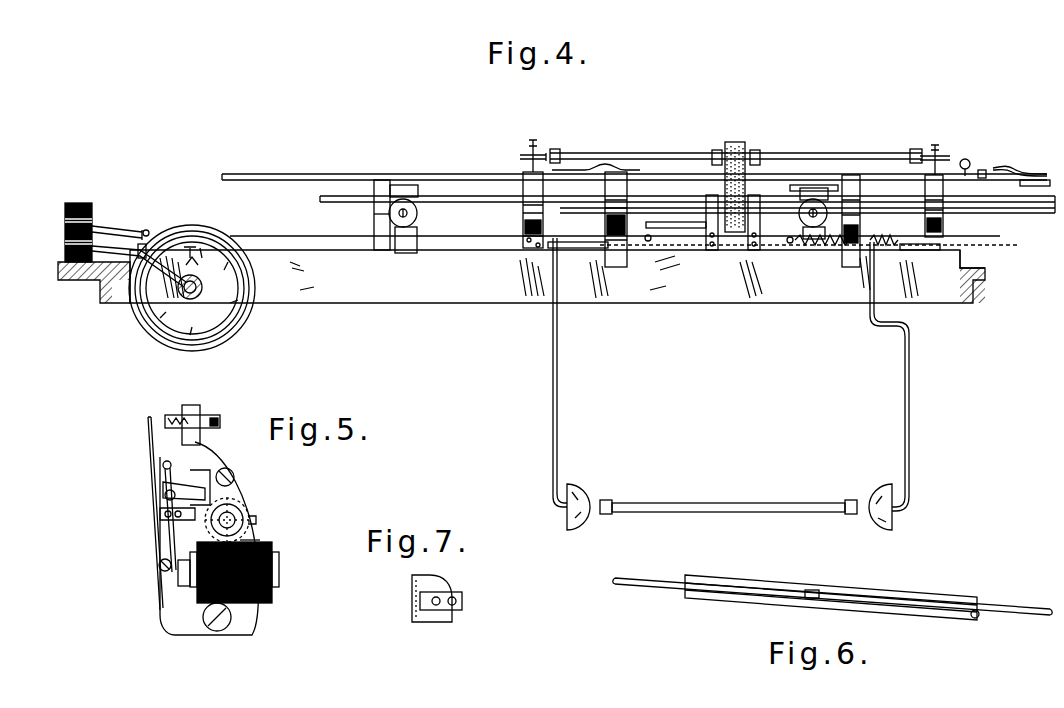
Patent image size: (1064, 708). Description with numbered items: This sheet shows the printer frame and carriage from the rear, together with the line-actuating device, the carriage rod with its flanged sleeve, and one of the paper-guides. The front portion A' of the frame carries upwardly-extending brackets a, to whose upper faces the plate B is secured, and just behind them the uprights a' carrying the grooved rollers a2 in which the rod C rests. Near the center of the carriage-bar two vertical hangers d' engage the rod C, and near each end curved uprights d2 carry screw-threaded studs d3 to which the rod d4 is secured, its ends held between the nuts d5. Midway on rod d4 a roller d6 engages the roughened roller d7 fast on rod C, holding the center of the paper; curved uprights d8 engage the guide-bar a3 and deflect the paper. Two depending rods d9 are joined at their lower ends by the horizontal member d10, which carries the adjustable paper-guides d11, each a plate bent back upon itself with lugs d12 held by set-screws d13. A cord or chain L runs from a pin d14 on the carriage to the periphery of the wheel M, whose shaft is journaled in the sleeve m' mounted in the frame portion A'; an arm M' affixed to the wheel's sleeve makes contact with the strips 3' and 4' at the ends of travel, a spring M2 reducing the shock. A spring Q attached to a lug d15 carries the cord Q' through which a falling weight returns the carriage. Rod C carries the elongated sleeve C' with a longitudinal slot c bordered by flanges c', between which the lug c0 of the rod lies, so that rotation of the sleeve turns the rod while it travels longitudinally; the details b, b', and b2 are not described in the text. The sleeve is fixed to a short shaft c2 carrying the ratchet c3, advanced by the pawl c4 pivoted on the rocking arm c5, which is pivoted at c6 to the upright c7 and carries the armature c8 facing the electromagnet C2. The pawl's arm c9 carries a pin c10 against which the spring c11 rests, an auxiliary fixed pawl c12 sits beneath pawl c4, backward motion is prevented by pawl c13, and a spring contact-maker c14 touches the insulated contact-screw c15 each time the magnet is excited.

In FIG. 4, the guide-bar a3 is at (846, 290).
In FIG. 4, the front portion of the frame A' is at (94, 296).
In FIG. 4, the contact-strip 4' is at (107, 230).
In FIG. 4, the contact-strip 3' is at (139, 242).
In FIG. 4, the wheel M is at (193, 291).
In FIG. 4, the arm M' is at (173, 299).
In FIG. 4, the sleeve m' is at (182, 325).
In FIG. 4, the spring M2 is at (190, 250).
In FIG. 4, the cord or chain L is at (248, 250).
In FIG. 4, the plate B is at (440, 172).
In FIG. 4, the rail strip b is at (624, 154).
In FIG. 4, the rail end hook b' is at (1021, 167).
In FIG. 4, the rail screw b2 is at (968, 170).
In FIG. 4, the rod C is at (687, 180).
In FIG. 6, the rod C is at (811, 584).
In FIG. 4, the elongated sleeve C' is at (823, 234).
In FIG. 4, the rod d4 is at (630, 160).
In FIG. 4, the screw-threaded stud d3 is at (535, 160).
In FIG. 4, the nut d5 is at (526, 158).
In FIG. 4, the curved upright d8 is at (606, 214).
In FIG. 4, the bracket a is at (615, 174).
In FIG. 4, the roller a2 is at (392, 213).
In FIG. 4, the upright a' is at (627, 173).
In FIG. 4, the roller d6 is at (735, 143).
In FIG. 4, the roughened roller d7 is at (745, 186).
In FIG. 4, the vertical hanger d' is at (710, 244).
In FIG. 4, the curved upright d2 is at (522, 228).
In FIG. 4, the pin d14 is at (648, 242).
In FIG. 4, the lug or pin d15 is at (790, 246).
In FIG. 4, the spring Q is at (846, 261).
In FIG. 4, the cord Q' is at (991, 271).
In FIG. 4, the depending rod d9 is at (555, 380).
In FIG. 4, the adjustable paper-guide d11 is at (588, 494).
In FIG. 7, the adjustable paper-guide d11 is at (420, 596).
In FIG. 4, the lug d12 is at (606, 516).
In FIG. 7, the lug d12 is at (458, 594).
In FIG. 4, the horizontal member d10 is at (730, 504).
In FIG. 7, the set-screw d13 is at (452, 606).
In FIG. 5, the spring contact-maker c14 is at (150, 458).
In FIG. 5, the insulated contact-screw c15 is at (168, 416).
In FIG. 5, the pin or lug c10 is at (163, 466).
In FIG. 5, the upwardly-extending arm c9 is at (165, 478).
In FIG. 5, the spring c11 is at (166, 500).
In FIG. 5, the auxiliary fixed pawl c12 is at (165, 522).
In FIG. 5, the pawl c4 is at (195, 492).
In FIG. 5, the pawl c13 is at (236, 482).
In FIG. 5, the short shaft or rod c2 is at (235, 516).
In FIG. 5, the ratchet c3 is at (255, 520).
In FIG. 5, the upright c7 is at (258, 540).
In FIG. 5, the electromagnet C2 is at (275, 588).
In FIG. 5, the rocking arm c5 is at (160, 576).
In FIG. 5, the armature c8 is at (180, 580).
In FIG. 5, the pivot c6 is at (212, 632).
In FIG. 6, the longitudinal slot c is at (833, 591).
In FIG. 6, the lug c0 is at (822, 592).
In FIG. 6, the flange c' is at (952, 608).